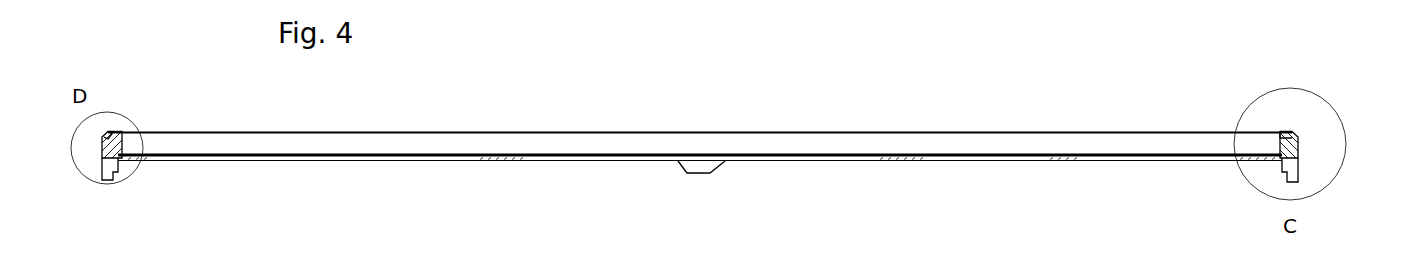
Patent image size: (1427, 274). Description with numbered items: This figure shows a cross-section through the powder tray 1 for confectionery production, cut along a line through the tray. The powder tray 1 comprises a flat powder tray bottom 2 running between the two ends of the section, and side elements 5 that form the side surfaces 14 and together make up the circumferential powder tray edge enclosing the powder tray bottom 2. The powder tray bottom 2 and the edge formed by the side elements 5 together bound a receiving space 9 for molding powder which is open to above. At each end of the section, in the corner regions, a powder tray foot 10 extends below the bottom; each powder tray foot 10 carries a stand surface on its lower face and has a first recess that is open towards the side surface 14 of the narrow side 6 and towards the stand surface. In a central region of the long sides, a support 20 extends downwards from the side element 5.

The powder tray 1 is at (1112, 97).
The powder tray bottom 2 is at (807, 162).
The side element 5 is at (112, 133).
The narrow side 6 is at (1300, 155).
The receiving space 9 is at (270, 143).
The powder tray foot 10 is at (108, 175).
The side surface 14 is at (112, 136).
The support 20 is at (700, 169).